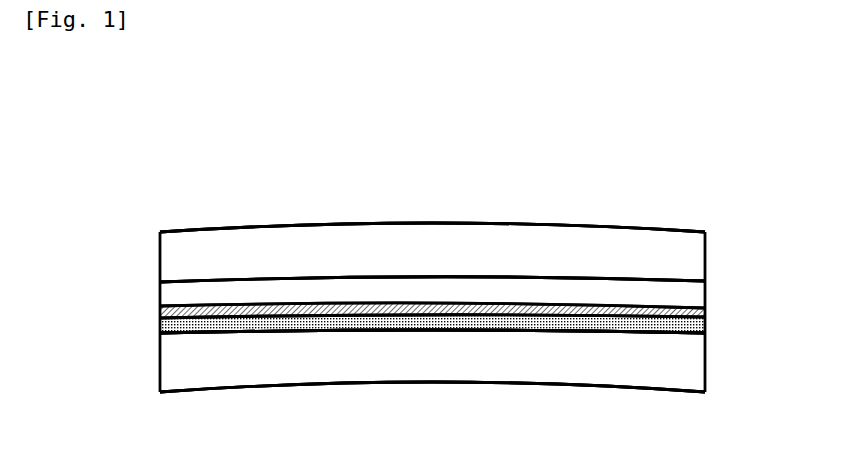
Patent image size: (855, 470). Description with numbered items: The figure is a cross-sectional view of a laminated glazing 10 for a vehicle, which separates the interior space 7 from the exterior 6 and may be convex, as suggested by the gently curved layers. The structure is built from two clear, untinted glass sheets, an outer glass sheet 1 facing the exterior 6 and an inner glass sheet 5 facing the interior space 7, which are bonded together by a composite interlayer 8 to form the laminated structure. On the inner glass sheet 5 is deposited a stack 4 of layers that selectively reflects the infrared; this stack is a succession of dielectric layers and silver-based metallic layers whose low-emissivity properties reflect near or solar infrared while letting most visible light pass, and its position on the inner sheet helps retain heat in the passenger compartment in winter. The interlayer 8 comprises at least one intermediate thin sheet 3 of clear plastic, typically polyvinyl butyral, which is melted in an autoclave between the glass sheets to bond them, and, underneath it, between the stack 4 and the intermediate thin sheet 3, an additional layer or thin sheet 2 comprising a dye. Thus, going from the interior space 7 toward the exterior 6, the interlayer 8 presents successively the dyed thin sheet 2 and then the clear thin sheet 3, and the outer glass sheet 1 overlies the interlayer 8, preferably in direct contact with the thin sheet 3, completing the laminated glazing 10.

The laminated glazing 10 is at (583, 190).
The exterior 6 is at (441, 198).
The outer glass sheet 1 is at (441, 262).
The intermediate thin sheet 3 is at (679, 291).
The additional layer or thin sheet comprising a dye 2 is at (688, 320).
The stack of layers selectively reflecting the infrared 4 is at (166, 338).
The inner glass sheet 5 is at (441, 370).
The interior space 7 is at (444, 443).
The interlayer 8 is at (757, 247).